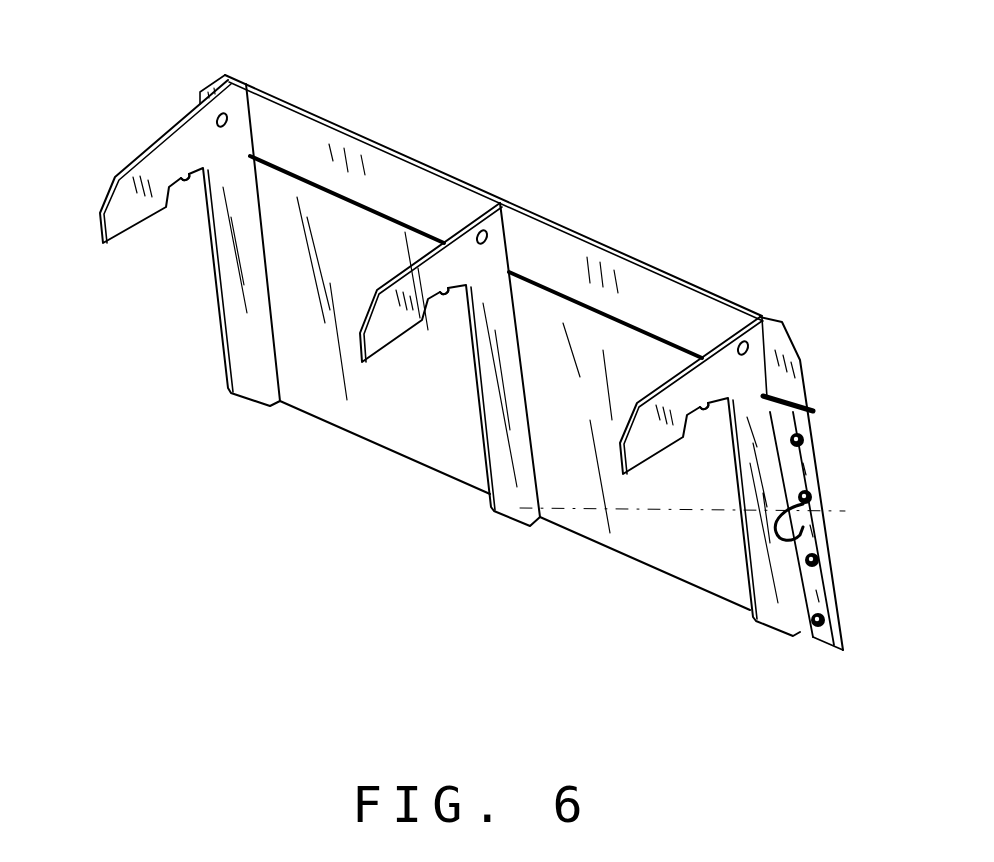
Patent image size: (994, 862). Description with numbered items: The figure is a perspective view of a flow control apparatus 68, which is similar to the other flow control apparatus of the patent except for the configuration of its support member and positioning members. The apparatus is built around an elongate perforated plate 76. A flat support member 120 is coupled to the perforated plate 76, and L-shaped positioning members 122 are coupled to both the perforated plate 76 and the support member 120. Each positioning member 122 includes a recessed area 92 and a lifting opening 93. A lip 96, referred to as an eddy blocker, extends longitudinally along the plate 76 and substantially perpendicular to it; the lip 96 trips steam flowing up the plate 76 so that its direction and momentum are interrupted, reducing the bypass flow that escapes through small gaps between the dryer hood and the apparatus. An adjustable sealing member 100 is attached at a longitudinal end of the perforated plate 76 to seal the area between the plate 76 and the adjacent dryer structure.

The flow control apparatus 68 is at (705, 228).
The perforated plate 76 is at (600, 524).
The flat support member 120 is at (390, 148).
The L-shaped positioning members 122 is at (100, 232).
The recessed areas 92 is at (181, 184).
The lifting openings 93 is at (229, 120).
The lip 96 is at (815, 409).
The adjustable sealing member 100 is at (848, 529).